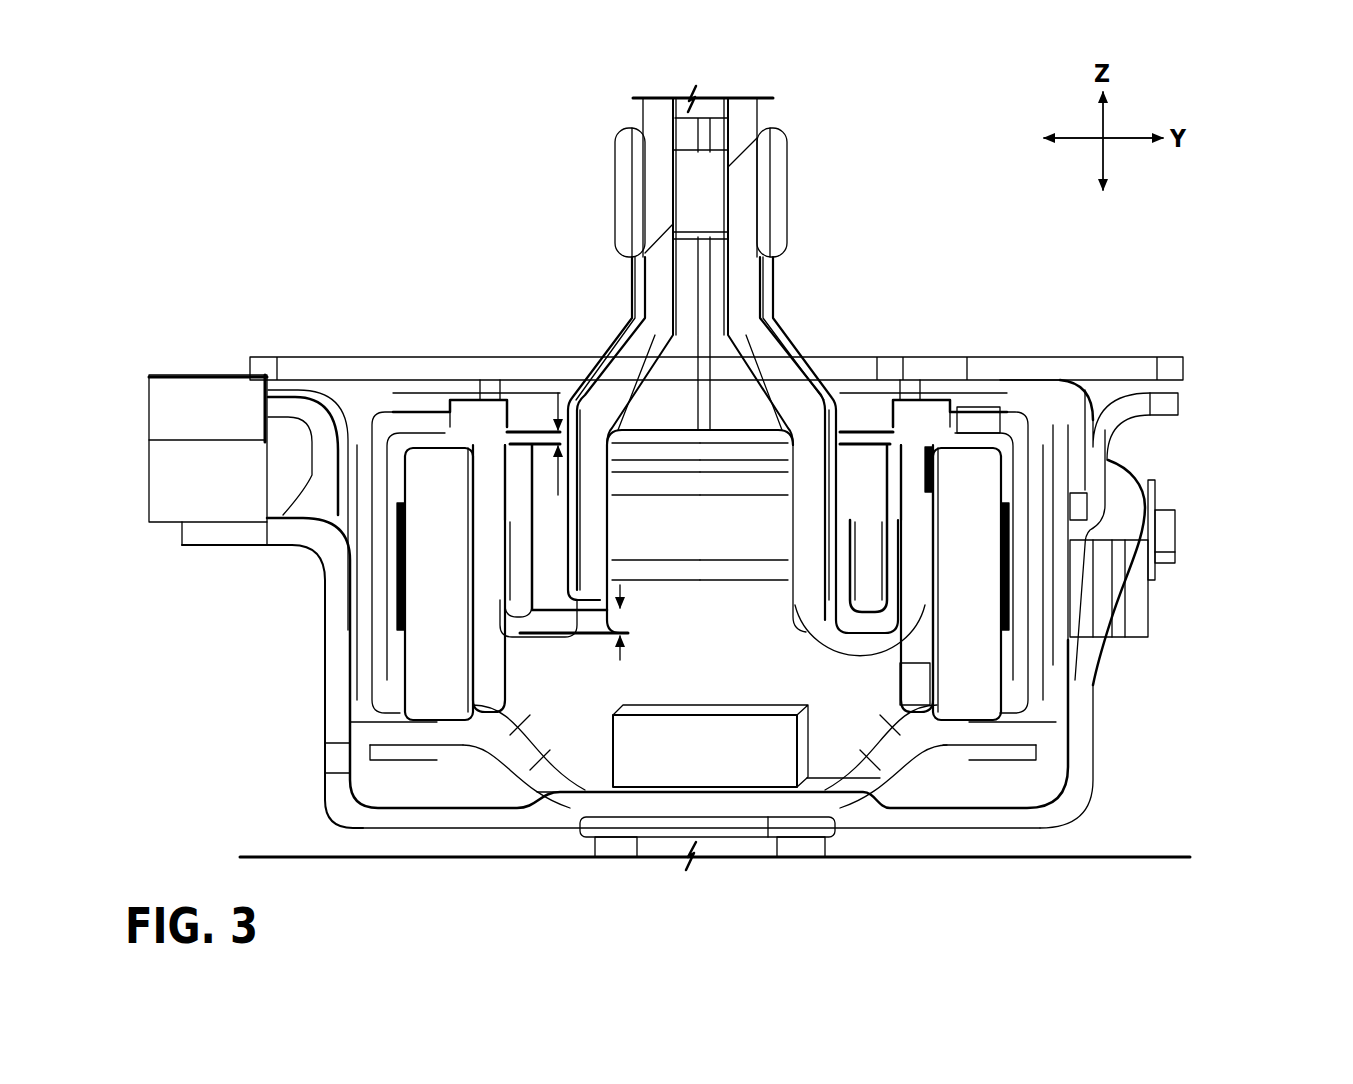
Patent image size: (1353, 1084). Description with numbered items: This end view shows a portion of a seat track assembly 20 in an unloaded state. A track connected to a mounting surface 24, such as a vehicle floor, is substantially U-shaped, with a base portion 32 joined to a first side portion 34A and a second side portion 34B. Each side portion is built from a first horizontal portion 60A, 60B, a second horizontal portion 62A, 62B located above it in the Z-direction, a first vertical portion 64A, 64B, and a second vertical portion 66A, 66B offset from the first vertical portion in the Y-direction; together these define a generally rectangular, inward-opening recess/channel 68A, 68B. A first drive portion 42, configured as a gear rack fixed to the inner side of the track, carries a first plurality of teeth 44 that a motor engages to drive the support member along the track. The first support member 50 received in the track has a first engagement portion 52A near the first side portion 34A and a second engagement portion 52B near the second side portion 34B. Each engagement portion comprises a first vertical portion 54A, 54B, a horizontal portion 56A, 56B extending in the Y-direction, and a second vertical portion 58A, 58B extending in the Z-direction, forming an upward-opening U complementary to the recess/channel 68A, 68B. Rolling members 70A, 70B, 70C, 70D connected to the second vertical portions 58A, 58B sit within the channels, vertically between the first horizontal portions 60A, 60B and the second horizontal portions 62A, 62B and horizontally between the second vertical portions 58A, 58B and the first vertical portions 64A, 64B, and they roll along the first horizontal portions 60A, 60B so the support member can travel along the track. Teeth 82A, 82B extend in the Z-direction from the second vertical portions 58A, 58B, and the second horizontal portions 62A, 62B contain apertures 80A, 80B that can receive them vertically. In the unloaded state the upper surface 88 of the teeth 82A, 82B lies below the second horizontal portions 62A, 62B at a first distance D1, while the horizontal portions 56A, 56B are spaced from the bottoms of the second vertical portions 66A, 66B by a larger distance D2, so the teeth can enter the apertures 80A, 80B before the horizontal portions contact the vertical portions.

The track assembly 20 is at (190, 170).
The mounting surface 24 is at (1138, 855).
The base portion 32 is at (842, 835).
The first side portion 34A is at (1057, 385).
The second side portion 34B is at (379, 393).
The first drive portion 42 is at (159, 368).
The first plurality of teeth 44 is at (228, 400).
The first support member 50 is at (795, 93).
The first engagement portion 52A is at (799, 322).
The second engagement portion 52B is at (616, 312).
The first vertical portion 54A is at (808, 525).
The first vertical portion 54B is at (592, 527).
The horizontal portion 56A is at (852, 650).
The horizontal portion 56B is at (553, 653).
The second vertical portion 58A is at (920, 583).
The second vertical portion 58B is at (480, 580).
The first horizontal portion 60A is at (987, 730).
The first horizontal portion 60B is at (427, 733).
The second horizontal portion 62A is at (1002, 430).
The second horizontal portion 62B is at (440, 398).
The first vertical portion 64A is at (1043, 567).
The first vertical portion 64B is at (355, 590).
The second vertical portion 66A is at (858, 558).
The second vertical portion 66B is at (540, 555).
The recess/channel 68A is at (1022, 464).
The recess/channel 68B is at (403, 438).
The first rolling member 70A is at (980, 685).
The second rolling member 70B is at (430, 695).
The third rolling member 70C is at (1123, 732).
The fourth rolling member 70D is at (318, 776).
The first plurality of apertures 80A is at (940, 412).
The second plurality of apertures 80B is at (513, 398).
The first plurality of teeth 82A is at (913, 455).
The second plurality of teeth 82B is at (556, 405).
The upper surface/portion 88 is at (490, 400).
The first distance D1 is at (560, 388).
The distance D2 is at (616, 650).